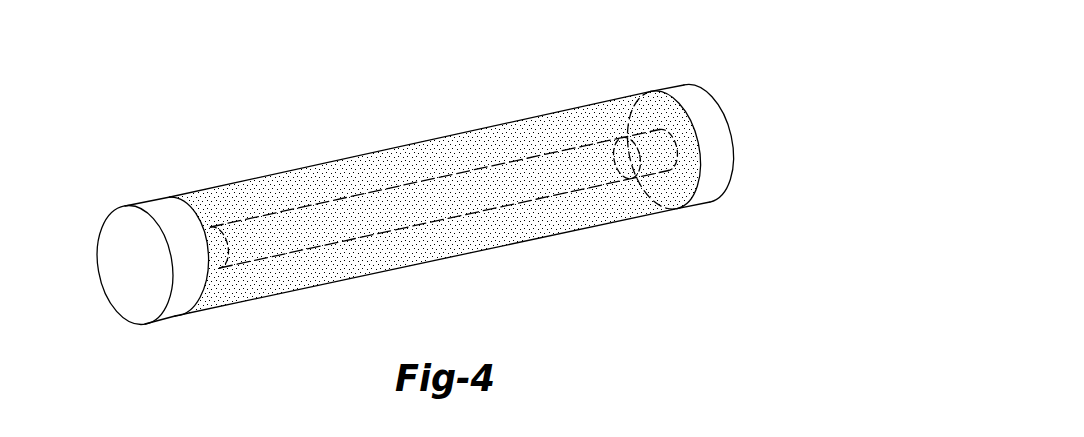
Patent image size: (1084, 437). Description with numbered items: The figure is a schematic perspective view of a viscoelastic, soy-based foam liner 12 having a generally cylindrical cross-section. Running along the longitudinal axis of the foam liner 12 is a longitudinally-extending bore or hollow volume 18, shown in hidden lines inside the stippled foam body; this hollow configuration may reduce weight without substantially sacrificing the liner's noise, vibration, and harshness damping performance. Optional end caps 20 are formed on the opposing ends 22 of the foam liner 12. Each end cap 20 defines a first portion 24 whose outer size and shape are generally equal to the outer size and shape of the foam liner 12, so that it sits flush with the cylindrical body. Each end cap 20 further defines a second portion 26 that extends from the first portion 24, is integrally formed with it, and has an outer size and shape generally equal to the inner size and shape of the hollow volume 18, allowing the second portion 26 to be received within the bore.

The viscoelastic, soy-based foam liner 12 is at (421, 148).
The hollow volume 18 is at (547, 196).
The end cap 20 is at (118, 326).
The opposing ends 22 is at (170, 198).
The first portion 24 is at (704, 204).
The second portion 26 is at (668, 158).